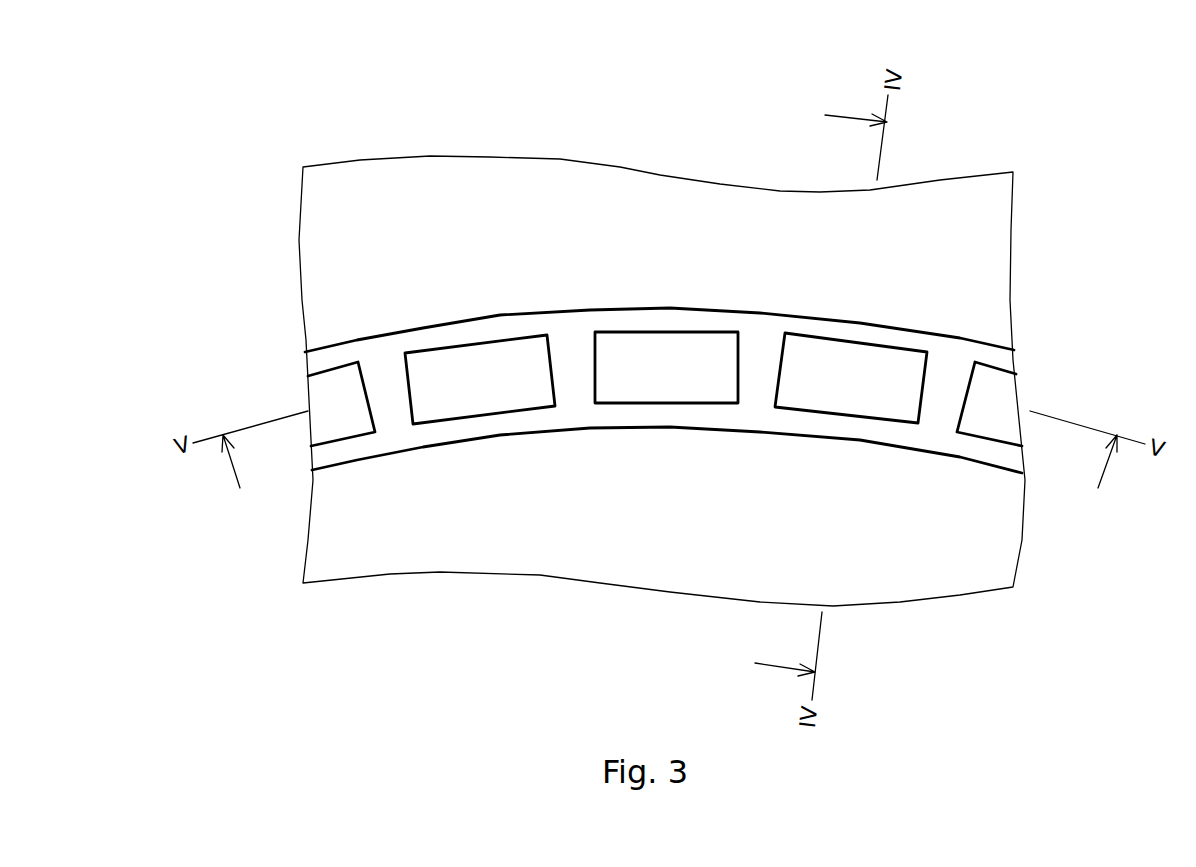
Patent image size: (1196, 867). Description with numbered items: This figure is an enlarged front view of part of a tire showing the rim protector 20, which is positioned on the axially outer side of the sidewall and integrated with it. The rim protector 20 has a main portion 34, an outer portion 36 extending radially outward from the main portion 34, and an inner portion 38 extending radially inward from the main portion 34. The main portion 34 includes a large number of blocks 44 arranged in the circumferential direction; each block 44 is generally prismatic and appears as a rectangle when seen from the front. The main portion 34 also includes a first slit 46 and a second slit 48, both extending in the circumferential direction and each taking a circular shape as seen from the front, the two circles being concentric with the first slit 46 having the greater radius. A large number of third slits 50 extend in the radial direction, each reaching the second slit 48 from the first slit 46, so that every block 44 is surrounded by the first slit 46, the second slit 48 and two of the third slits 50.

The rim protector 20 is at (968, 250).
The main portion 34 is at (500, 315).
The outer portion 36 is at (630, 255).
The inner portion 38 is at (607, 480).
The block 44 is at (618, 355).
The first slit 46 is at (678, 320).
The second slit 48 is at (667, 417).
The third slit 50 is at (760, 362).